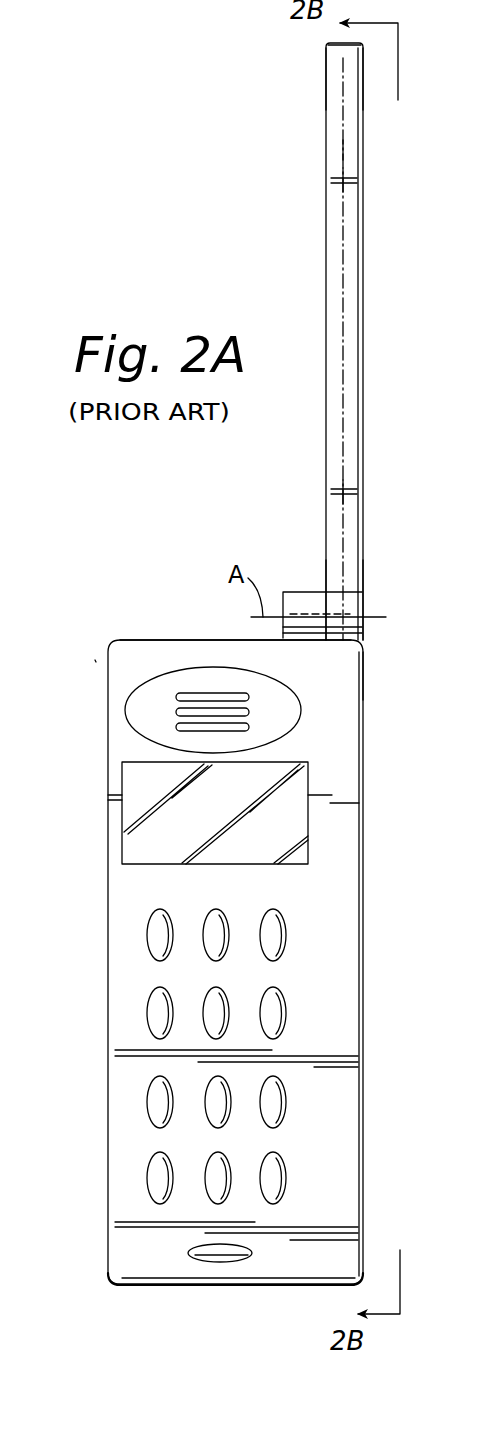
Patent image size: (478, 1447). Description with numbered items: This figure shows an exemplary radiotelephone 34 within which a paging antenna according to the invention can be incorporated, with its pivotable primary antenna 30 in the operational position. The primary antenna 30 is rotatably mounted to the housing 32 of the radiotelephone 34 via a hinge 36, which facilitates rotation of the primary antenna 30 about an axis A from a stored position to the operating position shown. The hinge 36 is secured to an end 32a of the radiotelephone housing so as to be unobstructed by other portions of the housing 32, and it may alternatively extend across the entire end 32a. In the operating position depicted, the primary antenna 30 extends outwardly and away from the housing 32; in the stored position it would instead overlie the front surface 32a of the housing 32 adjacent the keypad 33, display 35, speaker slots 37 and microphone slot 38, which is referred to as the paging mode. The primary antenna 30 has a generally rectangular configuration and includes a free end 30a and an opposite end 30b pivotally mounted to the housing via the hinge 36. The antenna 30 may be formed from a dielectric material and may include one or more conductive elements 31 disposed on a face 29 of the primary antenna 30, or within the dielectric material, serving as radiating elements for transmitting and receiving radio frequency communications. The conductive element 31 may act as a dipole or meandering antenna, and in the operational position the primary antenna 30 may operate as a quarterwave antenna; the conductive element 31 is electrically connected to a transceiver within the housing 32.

The face of the primary antenna 29 is at (337, 52).
The primary antenna 30 is at (364, 232).
The free end 30a is at (362, 88).
The opposite end 30b is at (364, 605).
The conductive element 31 is at (343, 148).
The housing 32 is at (365, 728).
The end of the radiotelephone housing 32a is at (197, 640).
The keypad 33 is at (170, 900).
The radiotelephone 34 is at (94, 658).
The display 35 is at (176, 823).
The hinge 36 is at (305, 587).
The speaker slots 37 is at (185, 668).
The microphone slot 38 is at (185, 1260).